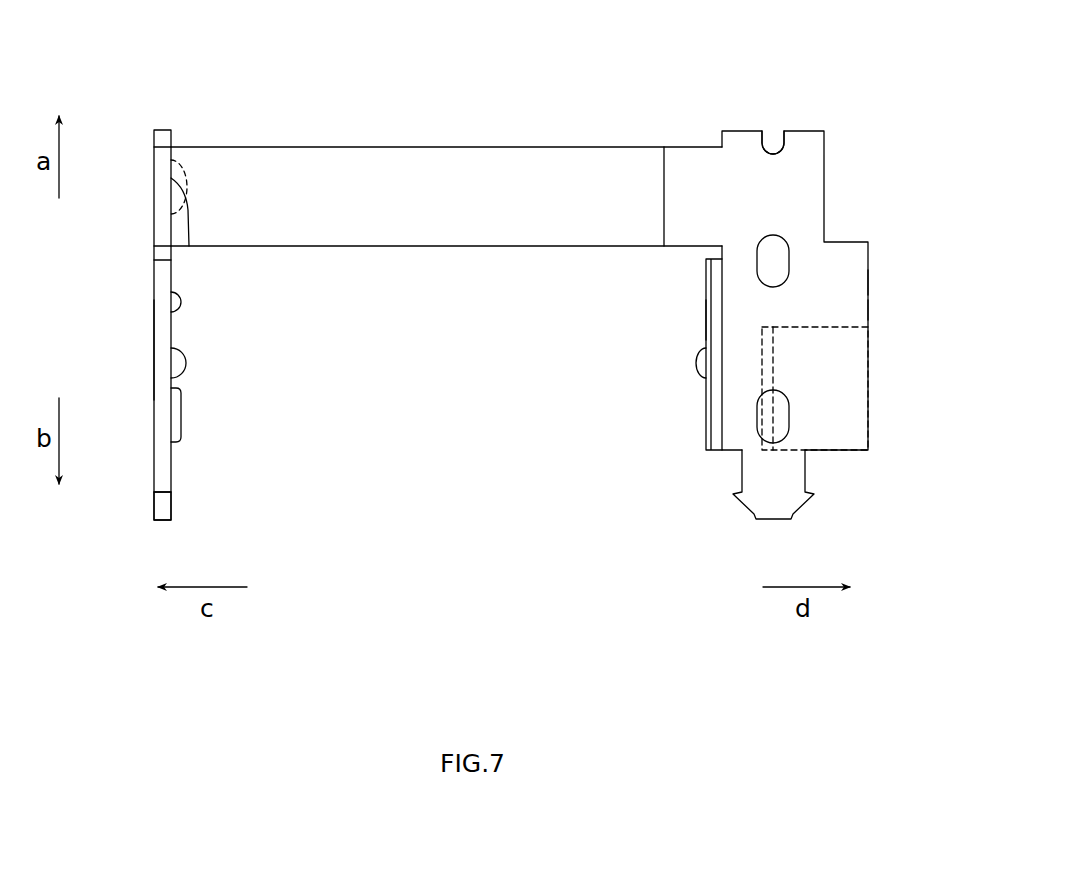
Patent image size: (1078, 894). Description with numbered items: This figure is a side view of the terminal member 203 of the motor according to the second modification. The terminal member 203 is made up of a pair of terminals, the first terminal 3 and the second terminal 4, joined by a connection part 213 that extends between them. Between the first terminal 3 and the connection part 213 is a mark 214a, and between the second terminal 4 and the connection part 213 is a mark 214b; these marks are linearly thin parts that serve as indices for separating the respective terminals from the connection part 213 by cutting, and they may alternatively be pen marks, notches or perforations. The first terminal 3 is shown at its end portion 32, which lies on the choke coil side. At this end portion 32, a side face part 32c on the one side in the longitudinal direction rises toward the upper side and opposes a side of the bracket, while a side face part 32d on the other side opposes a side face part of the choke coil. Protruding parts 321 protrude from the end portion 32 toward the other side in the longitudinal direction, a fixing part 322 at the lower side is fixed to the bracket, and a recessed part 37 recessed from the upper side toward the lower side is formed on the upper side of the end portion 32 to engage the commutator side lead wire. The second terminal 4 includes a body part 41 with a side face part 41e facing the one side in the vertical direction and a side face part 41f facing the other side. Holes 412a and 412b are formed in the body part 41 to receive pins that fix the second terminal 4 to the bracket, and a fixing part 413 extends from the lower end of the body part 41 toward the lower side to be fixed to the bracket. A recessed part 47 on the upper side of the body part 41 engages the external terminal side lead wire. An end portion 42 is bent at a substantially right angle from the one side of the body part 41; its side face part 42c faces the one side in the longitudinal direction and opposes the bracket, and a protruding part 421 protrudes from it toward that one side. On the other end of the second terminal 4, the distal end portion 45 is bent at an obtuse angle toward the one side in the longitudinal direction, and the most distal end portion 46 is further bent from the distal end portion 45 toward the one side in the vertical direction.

The first terminal 3 is at (387, 264).
The end portion 32 is at (164, 127).
The recessed part 37 is at (172, 140).
The protruding parts 321 is at (181, 415).
The fixing part 322 is at (163, 505).
The side face part 32c is at (155, 342).
The side face part 32d is at (165, 312).
The connection part 213 is at (465, 188).
The mark 214a is at (189, 246).
The mark 214b is at (664, 195).
The terminal member 203 is at (801, 275).
The second terminal 4 is at (801, 297).
The body part 41 is at (857, 252).
The side face part 41e is at (857, 282).
The side face part 41f is at (857, 310).
The hole 412a is at (790, 408).
The hole 412b is at (782, 252).
The fixing part 413 is at (787, 500).
The end portion 42 is at (712, 289).
The side face part 42c is at (705, 328).
The protruding part 421 is at (698, 358).
The distal end portion 45 is at (797, 380).
The most distal end portion 46 is at (780, 347).
The recessed part 47 is at (773, 133).